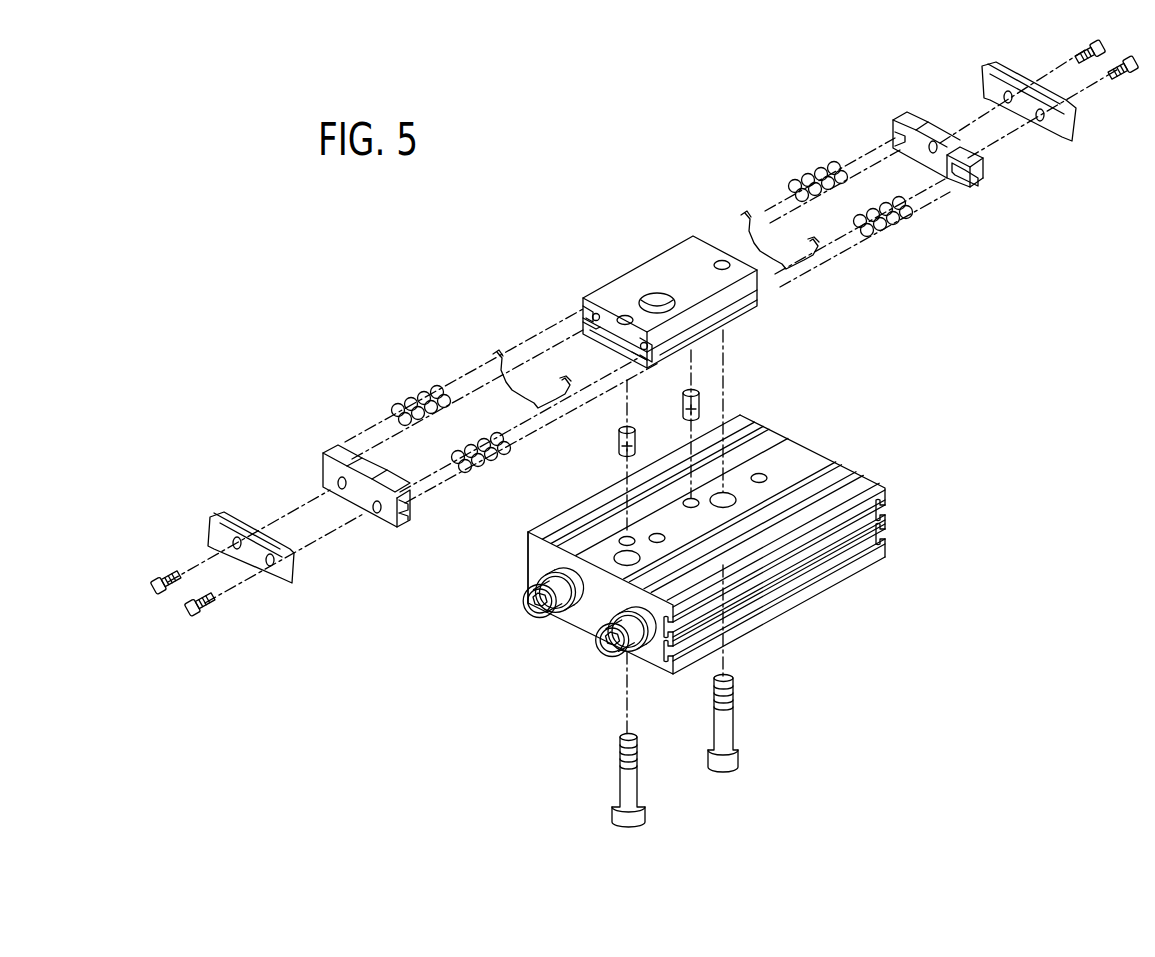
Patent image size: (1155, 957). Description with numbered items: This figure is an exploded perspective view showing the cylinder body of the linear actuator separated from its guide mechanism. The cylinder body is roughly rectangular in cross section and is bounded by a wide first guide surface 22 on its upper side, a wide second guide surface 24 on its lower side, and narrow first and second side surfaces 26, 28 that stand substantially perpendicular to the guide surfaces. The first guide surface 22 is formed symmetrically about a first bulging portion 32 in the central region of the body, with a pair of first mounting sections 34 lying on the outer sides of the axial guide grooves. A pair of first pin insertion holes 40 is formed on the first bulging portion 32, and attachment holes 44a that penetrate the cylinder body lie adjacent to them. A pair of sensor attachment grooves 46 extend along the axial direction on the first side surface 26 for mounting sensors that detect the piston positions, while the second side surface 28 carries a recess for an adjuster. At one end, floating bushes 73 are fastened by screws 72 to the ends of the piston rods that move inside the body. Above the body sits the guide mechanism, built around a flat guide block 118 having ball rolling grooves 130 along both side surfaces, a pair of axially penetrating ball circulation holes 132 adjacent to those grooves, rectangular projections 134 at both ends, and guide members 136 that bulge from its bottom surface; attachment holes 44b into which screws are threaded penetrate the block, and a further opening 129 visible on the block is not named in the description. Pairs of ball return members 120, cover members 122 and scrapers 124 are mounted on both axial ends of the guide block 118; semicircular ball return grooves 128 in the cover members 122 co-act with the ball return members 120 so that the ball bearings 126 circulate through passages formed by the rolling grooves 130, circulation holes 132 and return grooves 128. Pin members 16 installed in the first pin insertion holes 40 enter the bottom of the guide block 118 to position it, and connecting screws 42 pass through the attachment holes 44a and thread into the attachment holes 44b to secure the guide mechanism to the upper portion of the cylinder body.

The pin member 16 is at (635, 442).
The first guide surface 22 is at (560, 526).
The second guide surface 24 is at (582, 632).
The first side surface 26 is at (795, 602).
The second side surface 28 is at (526, 553).
The first bulging portion 32 is at (800, 458).
The first mounting section 34 is at (738, 450).
The first pin insertion hole 40 is at (689, 500).
The connecting screw 42 is at (735, 736).
The attachment hole 44a is at (622, 552).
The attachment hole 44b is at (624, 314).
The sensor attachment groove 46 is at (850, 545).
The screw 72 is at (537, 605).
The floating bush 73 is at (545, 600).
The guide block 118 is at (668, 262).
The ball return member 120 is at (498, 352).
The cover member 122 is at (397, 522).
The scraper 124 is at (280, 578).
The ball bearing 126 is at (404, 405).
The ball return groove 128 is at (410, 504).
The central hole 129 is at (657, 296).
The ball rolling groove 130 is at (760, 305).
The ball circulation hole 132 is at (594, 318).
The projection 134 is at (730, 262).
The guide member 136 is at (586, 312).